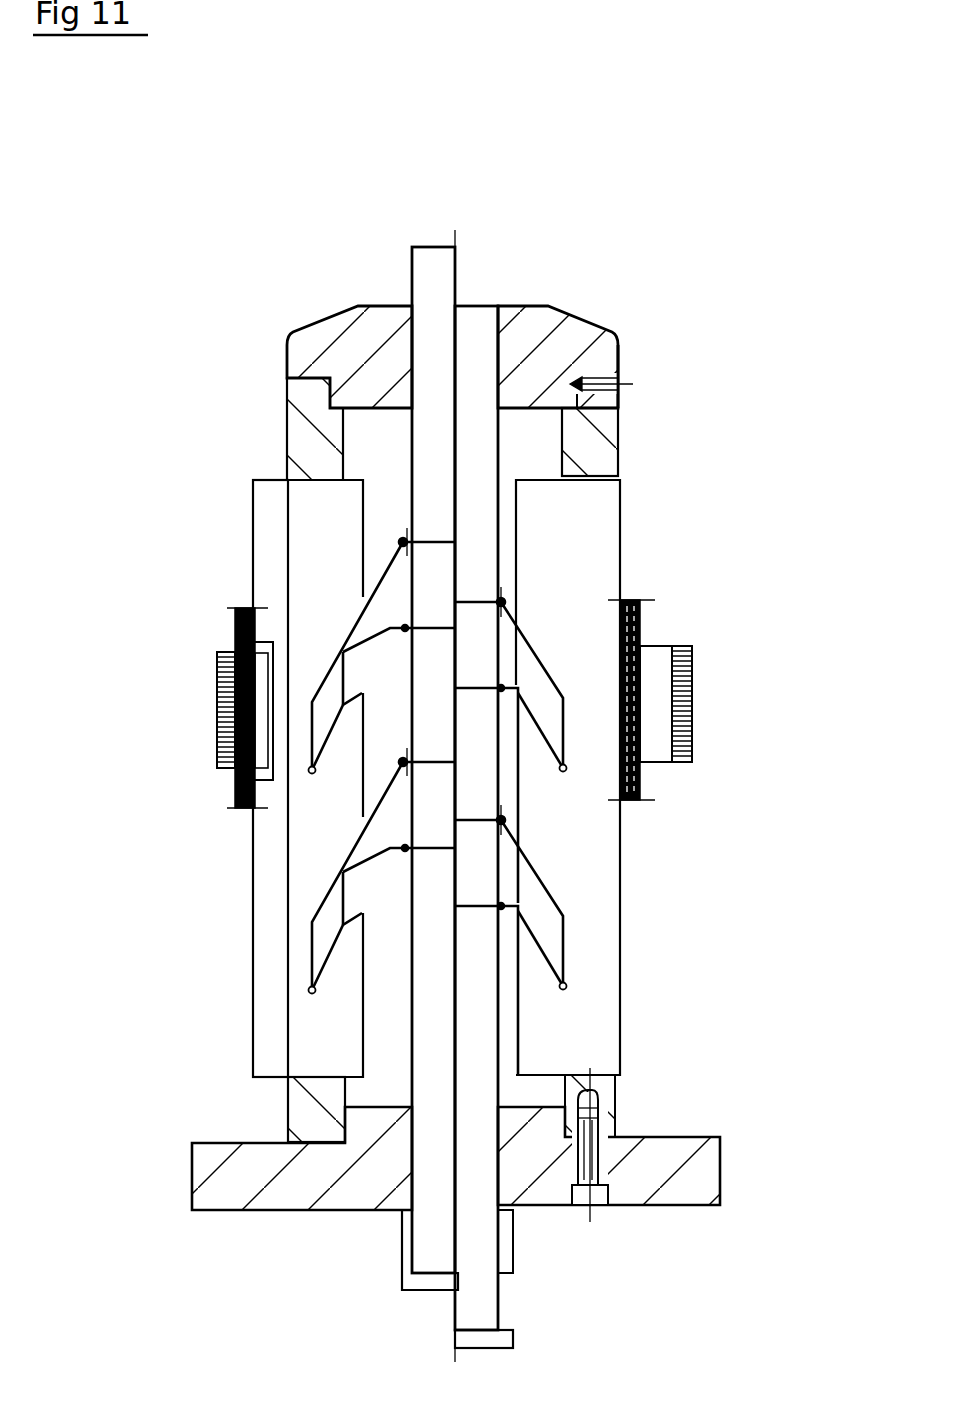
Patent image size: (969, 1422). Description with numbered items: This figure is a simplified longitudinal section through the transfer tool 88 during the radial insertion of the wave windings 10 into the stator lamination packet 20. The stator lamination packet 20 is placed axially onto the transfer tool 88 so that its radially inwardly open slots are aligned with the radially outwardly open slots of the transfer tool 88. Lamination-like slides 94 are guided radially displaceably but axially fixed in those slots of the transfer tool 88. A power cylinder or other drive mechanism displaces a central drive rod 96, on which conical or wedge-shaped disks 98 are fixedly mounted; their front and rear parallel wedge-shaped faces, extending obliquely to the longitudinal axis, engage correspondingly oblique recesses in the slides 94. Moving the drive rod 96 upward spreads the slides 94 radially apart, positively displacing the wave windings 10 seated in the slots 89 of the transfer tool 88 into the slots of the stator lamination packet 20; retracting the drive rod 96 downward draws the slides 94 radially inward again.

The central drive rod 96 is at (470, 343).
The transfer tool 88 is at (553, 298).
The lamination-like slides 94 is at (278, 513).
The wedge-shaped disks 98 is at (543, 917).
The slot of the transfer tool 89 is at (238, 628).
The wave windings 10 is at (644, 611).
The stator lamination packet 20 is at (685, 741).